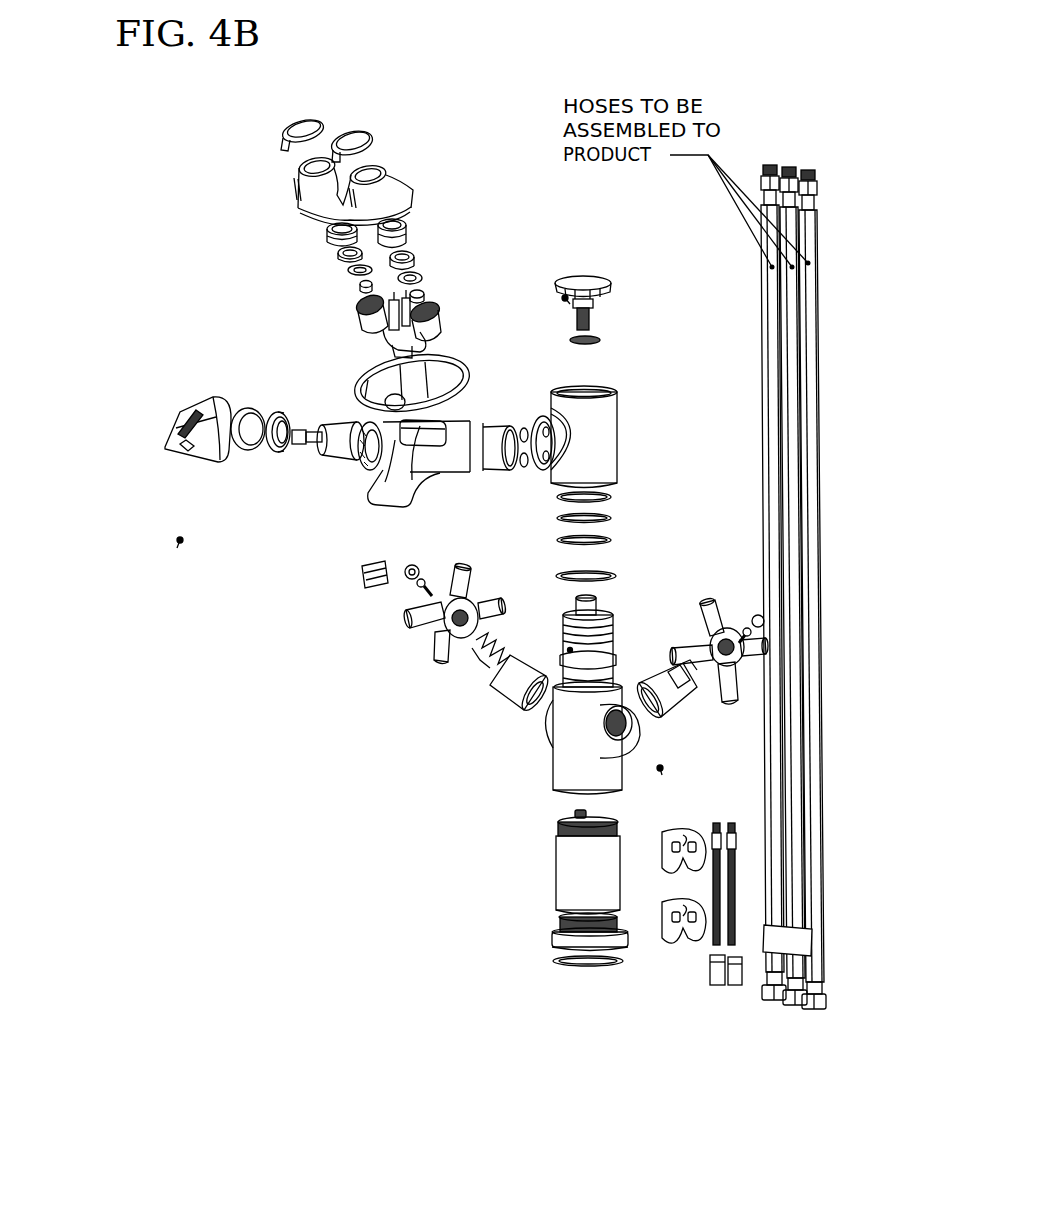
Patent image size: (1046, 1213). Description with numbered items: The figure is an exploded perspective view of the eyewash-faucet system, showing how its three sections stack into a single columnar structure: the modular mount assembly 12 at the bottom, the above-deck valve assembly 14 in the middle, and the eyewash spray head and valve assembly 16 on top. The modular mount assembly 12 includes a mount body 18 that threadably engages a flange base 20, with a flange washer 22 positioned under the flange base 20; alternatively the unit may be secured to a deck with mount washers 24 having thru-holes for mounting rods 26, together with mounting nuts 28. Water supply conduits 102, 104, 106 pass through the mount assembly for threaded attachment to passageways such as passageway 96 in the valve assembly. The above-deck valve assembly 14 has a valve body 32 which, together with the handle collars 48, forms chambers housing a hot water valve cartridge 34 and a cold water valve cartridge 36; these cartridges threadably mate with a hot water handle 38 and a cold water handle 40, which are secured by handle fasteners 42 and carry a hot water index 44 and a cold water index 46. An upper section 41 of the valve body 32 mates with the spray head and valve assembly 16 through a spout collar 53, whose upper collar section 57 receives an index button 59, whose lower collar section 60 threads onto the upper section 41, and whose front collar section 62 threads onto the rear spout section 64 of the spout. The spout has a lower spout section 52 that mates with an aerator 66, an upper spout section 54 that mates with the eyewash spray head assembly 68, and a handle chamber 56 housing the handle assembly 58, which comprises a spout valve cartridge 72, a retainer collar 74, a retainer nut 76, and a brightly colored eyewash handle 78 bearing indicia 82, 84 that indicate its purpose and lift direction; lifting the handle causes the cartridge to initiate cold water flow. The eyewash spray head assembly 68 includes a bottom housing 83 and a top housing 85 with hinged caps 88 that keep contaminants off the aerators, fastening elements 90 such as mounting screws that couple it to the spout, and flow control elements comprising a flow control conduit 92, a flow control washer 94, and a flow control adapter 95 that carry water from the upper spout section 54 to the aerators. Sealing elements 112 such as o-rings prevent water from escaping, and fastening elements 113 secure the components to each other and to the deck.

The modular mount assembly 12 is at (307, 1024).
The above-deck valve assembly 14 is at (216, 856).
The eyewash spray head and valve assembly 16 is at (690, 378).
The mount body 18 is at (495, 885).
The flange base 20 is at (513, 958).
The flange washer 22 is at (522, 999).
The mount washer 24 is at (670, 904).
The mounting rod 26 is at (722, 862).
The mounting nut 28 is at (688, 998).
The valve body 32 is at (497, 767).
The hot water valve cartridge 34 is at (398, 696).
The cold water valve cartridge 36 is at (692, 719).
The hot water handle 38 is at (388, 634).
The cold water handle 40 is at (702, 650).
The upper section of the valve body 41 is at (562, 641).
The handle fastener 42 is at (486, 662).
The hot water index 44 is at (369, 560).
The cold water index 46 is at (713, 576).
The handle collar 48 is at (438, 729).
The lower spout section 52 is at (404, 488).
The spout collar 53 is at (617, 439).
The upper spout section 54 is at (438, 493).
The handle chamber 56 is at (294, 516).
The upper collar section 57 is at (630, 367).
The handle assembly 58 is at (124, 514).
The index button 59 is at (608, 259).
The lower collar section 60 is at (621, 437).
The front collar section 62 is at (560, 412).
The rear spout section 64 is at (502, 498).
The aerator 66 is at (308, 595).
The eyewash spray head assembly 68 is at (579, 29).
The spout valve cartridge 72 is at (296, 467).
The retainer collar 74 is at (219, 466).
The retainer nut 76 is at (227, 373).
The eyewash handle 78 is at (170, 398).
The indicia 82 is at (126, 418).
The bottom housing 83 is at (371, 382).
The indicia 84 is at (110, 460).
The top housing 85 is at (412, 169).
The cap 88 is at (360, 95).
The fastening element 90 is at (347, 276).
The flow control conduit 92 is at (306, 278).
The flow control washer 94 is at (286, 246).
The flow control adapter 95 is at (454, 197).
The hot and cold water passageway 96 is at (460, 231).
The water supply conduit 102 is at (806, 535).
The water supply conduit 104 is at (741, 514).
The water supply conduit 106 is at (787, 523).
The sealing element 112 is at (607, 450).
The fastening element 113 is at (380, 561).